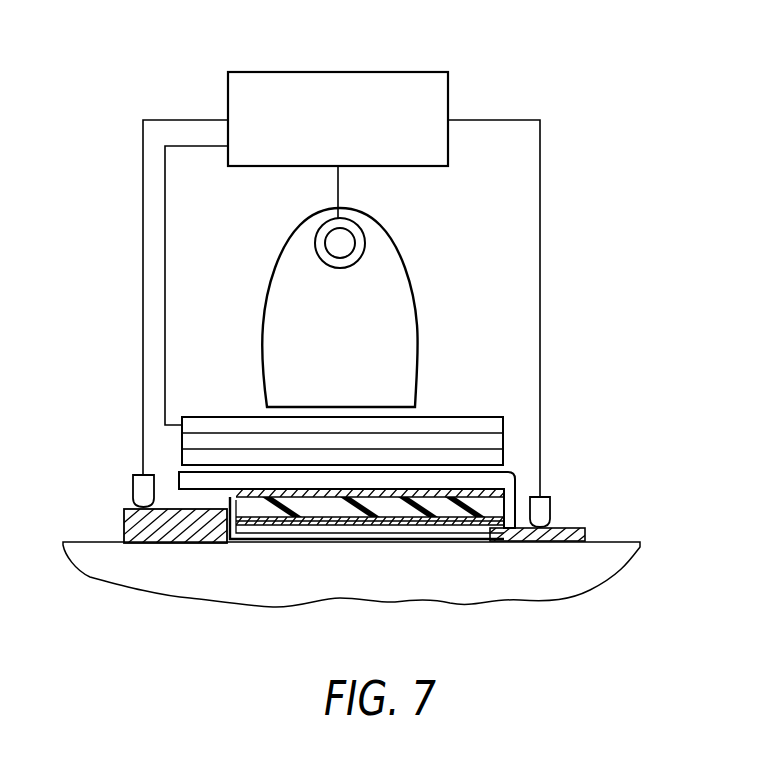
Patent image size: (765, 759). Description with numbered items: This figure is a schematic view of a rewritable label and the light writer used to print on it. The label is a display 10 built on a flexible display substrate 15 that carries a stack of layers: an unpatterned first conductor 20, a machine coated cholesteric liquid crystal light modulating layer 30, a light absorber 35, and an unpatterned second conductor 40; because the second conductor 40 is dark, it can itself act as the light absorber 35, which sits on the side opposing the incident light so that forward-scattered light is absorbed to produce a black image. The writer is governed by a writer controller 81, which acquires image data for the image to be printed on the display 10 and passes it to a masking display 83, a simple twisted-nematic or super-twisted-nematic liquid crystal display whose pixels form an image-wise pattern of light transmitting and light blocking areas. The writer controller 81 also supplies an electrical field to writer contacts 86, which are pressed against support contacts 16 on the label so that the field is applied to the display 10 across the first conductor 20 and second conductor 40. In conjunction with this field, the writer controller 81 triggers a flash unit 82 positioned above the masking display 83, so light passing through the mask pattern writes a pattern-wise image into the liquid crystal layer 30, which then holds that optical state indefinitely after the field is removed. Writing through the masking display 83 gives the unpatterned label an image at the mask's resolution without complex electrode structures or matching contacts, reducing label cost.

The display 10 is at (288, 540).
The display substrate 15 is at (504, 480).
The support contacts 16 is at (123, 527).
The first conductor 20 is at (460, 492).
The cholesteric liquid crystal light modulating layer 30 is at (312, 510).
The light absorber 35 is at (345, 503).
The second conductor 40 is at (400, 500).
The writer controller 81 is at (228, 105).
The flash unit 82 is at (400, 252).
The masking display 83 is at (496, 408).
The writer contacts 86 is at (132, 483).